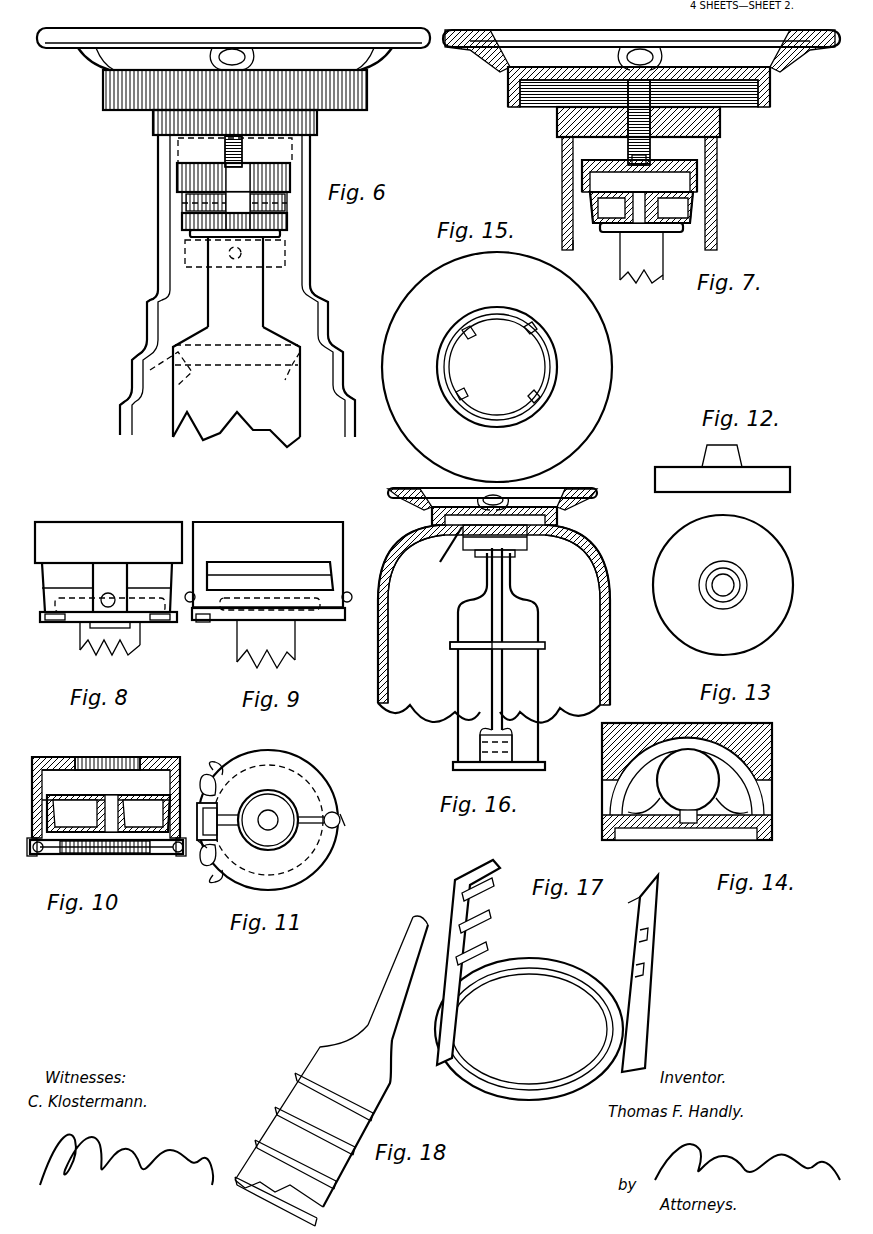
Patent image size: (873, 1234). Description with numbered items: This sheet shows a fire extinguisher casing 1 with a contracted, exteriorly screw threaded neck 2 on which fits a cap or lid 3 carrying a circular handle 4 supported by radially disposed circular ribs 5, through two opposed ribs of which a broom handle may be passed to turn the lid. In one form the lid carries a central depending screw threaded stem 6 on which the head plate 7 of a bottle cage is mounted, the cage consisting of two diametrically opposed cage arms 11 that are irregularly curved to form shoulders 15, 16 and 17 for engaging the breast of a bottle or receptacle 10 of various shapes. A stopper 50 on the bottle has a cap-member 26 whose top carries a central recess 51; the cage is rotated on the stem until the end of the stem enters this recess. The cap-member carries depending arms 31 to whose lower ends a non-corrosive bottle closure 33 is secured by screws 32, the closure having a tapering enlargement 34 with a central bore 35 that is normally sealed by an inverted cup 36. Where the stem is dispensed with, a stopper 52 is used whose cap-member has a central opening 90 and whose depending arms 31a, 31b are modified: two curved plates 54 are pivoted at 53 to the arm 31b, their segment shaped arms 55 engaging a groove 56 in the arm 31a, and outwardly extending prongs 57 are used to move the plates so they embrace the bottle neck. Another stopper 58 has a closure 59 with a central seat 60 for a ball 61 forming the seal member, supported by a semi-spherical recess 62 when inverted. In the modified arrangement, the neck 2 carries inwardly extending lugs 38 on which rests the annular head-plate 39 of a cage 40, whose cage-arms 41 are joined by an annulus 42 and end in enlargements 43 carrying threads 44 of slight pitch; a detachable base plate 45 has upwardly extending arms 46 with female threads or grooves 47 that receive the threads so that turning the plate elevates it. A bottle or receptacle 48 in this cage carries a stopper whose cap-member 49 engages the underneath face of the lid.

In FIG. 15, the fire extinguisher casing 1 is at (497, 367).
In FIG. 16, the fire extinguisher casing 1 is at (605, 562).
In FIG. 15, the screw threaded neck 2 is at (555, 355).
In FIG. 16, the screw threaded neck 2 is at (560, 518).
In FIG. 6, the cap or lid 3 is at (367, 90).
In FIG. 7, the cap or lid 3 is at (770, 86).
In FIG. 6, the circular handle 4 is at (315, 33).
In FIG. 7, the circular handle 4 is at (641, 46).
In FIG. 16, the circular handle 4 is at (552, 492).
In FIG. 6, the circular ribs 5 is at (100, 60).
In FIG. 7, the circular ribs 5 is at (495, 50).
In FIG. 16, the circular ribs 5 is at (483, 496).
In FIG. 6, the screw threaded stem 6 is at (235, 151).
In FIG. 7, the screw threaded stem 6 is at (634, 128).
In FIG. 6, the head plate 7 is at (318, 122).
In FIG. 7, the head plate 7 is at (720, 118).
In FIG. 6, the bottle or receptacle 10 is at (225, 342).
In FIG. 7, the bottle or receptacle 10 is at (642, 257).
In FIG. 8, the bottle or receptacle 10 is at (110, 638).
In FIG. 9, the bottle or receptacle 10 is at (266, 644).
In FIG. 6, the cage arms 11 is at (323, 250).
In FIG. 7, the cage arms 11 is at (562, 186).
In FIG. 6, the shoulders 15 is at (130, 393).
In FIG. 6, the shoulders 16 is at (136, 355).
In FIG. 6, the shoulders 17 is at (148, 298).
In FIG. 6, the cap-member 26 is at (290, 165).
In FIG. 7, the cap-member 26 is at (697, 170).
In FIG. 6, the depending arms 31 is at (290, 209).
In FIG. 8, the depending arms 31 is at (115, 581).
In FIG. 9, the depending arms 31 is at (335, 579).
In FIG. 10, the depending arm 31a is at (48, 787).
In FIG. 11, the depending arm 31b is at (203, 778).
In FIG. 6, the screws 32 is at (290, 228).
In FIG. 10, the screws 32 is at (62, 848).
In FIG. 11, the screws 32 is at (204, 846).
In FIG. 7, the bottle closure 33 is at (693, 212).
In FIG. 12, the bottle closure 33 is at (772, 487).
In FIG. 13, the bottle closure 33 is at (723, 585).
In FIG. 9, the bottle closure 33 is at (323, 602).
In FIG. 10, the bottle closure 33 is at (128, 835).
In FIG. 7, the tapering enlargement 34 is at (610, 200).
In FIG. 12, the tapering enlargement 34 is at (735, 453).
In FIG. 10, the tapering enlargement 34 is at (97, 815).
In FIG. 7, the central bore 35 is at (660, 208).
In FIG. 10, the central bore 35 is at (115, 805).
In FIG. 11, the central bore 35 is at (276, 815).
In FIG. 6, the inverted cup 36 is at (287, 193).
In FIG. 7, the inverted cup 36 is at (695, 198).
In FIG. 15, the lugs 38 is at (530, 337).
In FIG. 16, the head-plate or annulus 39 is at (442, 555).
In FIG. 16, the cage 40 is at (509, 638).
In FIG. 16, the cage-arms 41 is at (502, 683).
In FIG. 18, the cage-arms 41 is at (408, 925).
In FIG. 16, the annulus 42 is at (456, 646).
In FIG. 16, the enlargements 43 is at (513, 729).
In FIG. 18, the enlargements 43 is at (315, 1050).
In FIG. 16, the threads 44 is at (482, 732).
In FIG. 18, the threads 44 is at (295, 1076).
In FIG. 16, the base plate 45 is at (502, 776).
In FIG. 17, the base plate 45 is at (529, 1020).
In FIG. 16, the upwardly extending arms 46 is at (513, 753).
In FIG. 17, the upwardly extending arms 46 is at (462, 888).
In FIG. 17, the female threads or grooves 47 is at (488, 925).
In FIG. 16, the bottle or receptacle 48 is at (522, 608).
In FIG. 16, the cap-member 49 is at (508, 541).
In FIG. 6, the stopper 50 is at (180, 212).
In FIG. 7, the stopper 50 is at (586, 242).
In FIG. 7, the central recess 51 is at (654, 152).
In FIG. 8, the stopper 52 is at (108, 531).
In FIG. 9, the stopper 52 is at (268, 554).
In FIG. 10, the stopper 52 is at (106, 788).
In FIG. 10, the pivot 53 is at (180, 856).
In FIG. 11, the pivot 53 is at (345, 820).
In FIG. 10, the curved plates 54 is at (46, 866).
In FIG. 11, the curved plates 54 is at (283, 770).
In FIG. 11, the segment shaped arms 55 is at (232, 771).
In FIG. 10, the groove 56 is at (32, 856).
In FIG. 11, the prongs 57 is at (224, 766).
In FIG. 14, the stopper 58 is at (772, 758).
In FIG. 14, the closure 59 is at (710, 825).
In FIG. 14, the central seat 60 is at (668, 815).
In FIG. 14, the ball 61 is at (688, 780).
In FIG. 14, the seat 62 is at (658, 757).
In FIG. 10, the central opening 90 is at (112, 762).